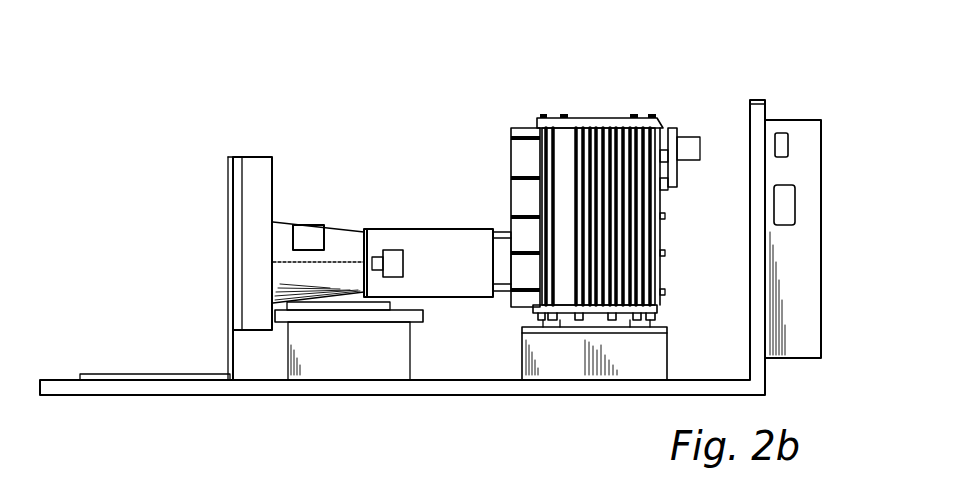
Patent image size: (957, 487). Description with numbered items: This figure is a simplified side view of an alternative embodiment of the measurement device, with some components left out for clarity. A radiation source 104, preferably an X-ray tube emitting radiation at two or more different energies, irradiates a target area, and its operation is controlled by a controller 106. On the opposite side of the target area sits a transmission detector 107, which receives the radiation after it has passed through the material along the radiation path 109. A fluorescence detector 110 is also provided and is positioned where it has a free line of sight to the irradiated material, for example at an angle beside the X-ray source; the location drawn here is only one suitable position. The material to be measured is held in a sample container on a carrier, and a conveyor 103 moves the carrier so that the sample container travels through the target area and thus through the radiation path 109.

The conveyor 103 is at (422, 314).
The radiation source 104 is at (590, 123).
The controller 106 is at (795, 128).
The transmission detector 107 is at (255, 167).
The radiation path 109 is at (337, 262).
The fluorescence detector 110 is at (312, 224).